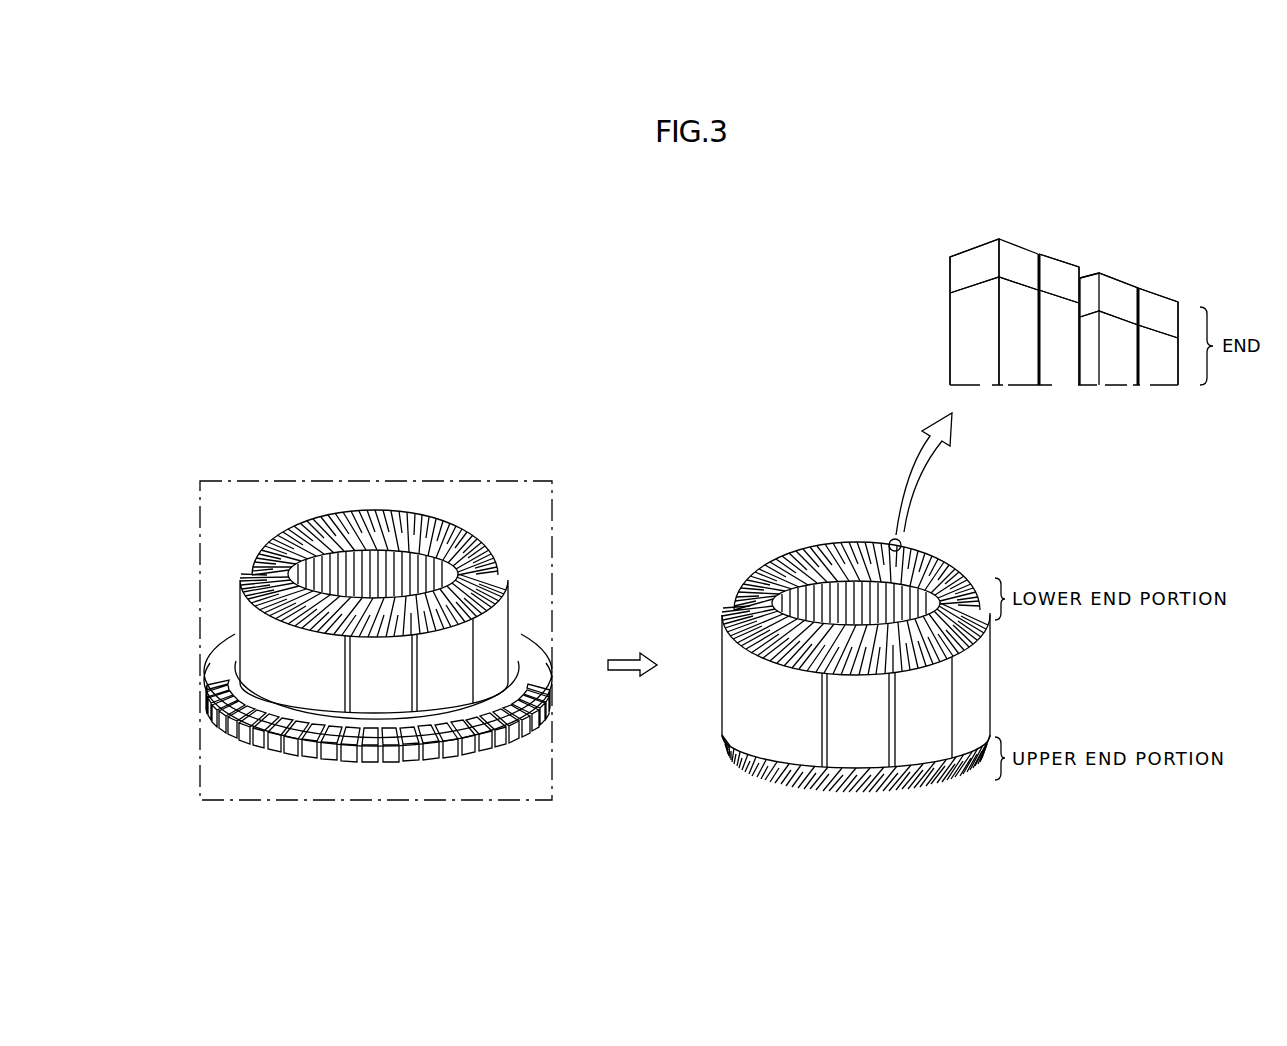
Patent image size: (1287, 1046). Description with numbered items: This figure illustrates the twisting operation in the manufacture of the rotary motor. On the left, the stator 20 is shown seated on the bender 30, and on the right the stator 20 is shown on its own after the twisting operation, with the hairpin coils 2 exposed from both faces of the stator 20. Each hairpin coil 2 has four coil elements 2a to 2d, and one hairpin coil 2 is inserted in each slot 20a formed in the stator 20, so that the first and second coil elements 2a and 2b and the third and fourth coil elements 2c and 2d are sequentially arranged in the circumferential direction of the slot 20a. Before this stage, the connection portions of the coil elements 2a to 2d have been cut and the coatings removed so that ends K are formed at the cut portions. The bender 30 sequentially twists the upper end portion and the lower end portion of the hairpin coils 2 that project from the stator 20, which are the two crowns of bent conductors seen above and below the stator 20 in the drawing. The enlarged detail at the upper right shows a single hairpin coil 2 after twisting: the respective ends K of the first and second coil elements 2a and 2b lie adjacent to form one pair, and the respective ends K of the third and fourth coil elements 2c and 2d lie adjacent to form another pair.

The hairpin coil 2 is at (387, 512).
The first coil element 2a is at (1022, 364).
The second coil element 2b is at (1060, 367).
The third coil element 2c is at (1117, 372).
The fourth coil element 2d is at (1163, 375).
The end K is at (973, 267).
The stator 20 is at (270, 652).
The slot 20a is at (950, 660).
The bender 30 is at (202, 718).